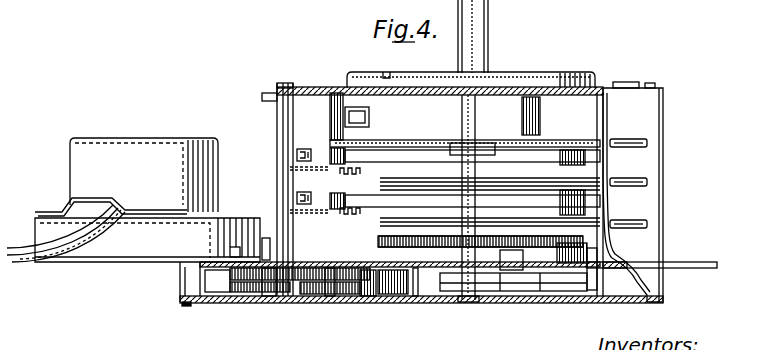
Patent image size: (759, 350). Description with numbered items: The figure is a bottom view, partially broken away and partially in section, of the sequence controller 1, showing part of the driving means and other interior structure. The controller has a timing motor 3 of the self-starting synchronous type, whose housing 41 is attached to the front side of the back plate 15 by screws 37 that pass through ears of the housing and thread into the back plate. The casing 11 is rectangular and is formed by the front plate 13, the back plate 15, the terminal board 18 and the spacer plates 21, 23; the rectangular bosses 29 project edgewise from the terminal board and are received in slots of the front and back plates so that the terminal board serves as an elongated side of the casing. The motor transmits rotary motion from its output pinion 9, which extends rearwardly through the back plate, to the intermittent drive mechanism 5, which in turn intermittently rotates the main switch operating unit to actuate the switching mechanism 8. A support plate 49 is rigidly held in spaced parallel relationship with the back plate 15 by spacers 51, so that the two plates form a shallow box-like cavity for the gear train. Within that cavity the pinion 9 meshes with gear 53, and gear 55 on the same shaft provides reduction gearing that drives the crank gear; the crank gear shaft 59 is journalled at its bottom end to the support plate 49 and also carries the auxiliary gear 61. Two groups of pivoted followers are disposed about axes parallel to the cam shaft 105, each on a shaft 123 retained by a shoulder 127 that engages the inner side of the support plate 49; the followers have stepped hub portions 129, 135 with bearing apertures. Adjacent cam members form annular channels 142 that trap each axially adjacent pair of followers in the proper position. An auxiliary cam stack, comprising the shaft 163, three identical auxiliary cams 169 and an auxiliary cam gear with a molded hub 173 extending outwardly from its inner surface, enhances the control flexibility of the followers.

The sequence controller 1 is at (207, 99).
The timing motor 3 is at (132, 143).
The intermittent drive mechanism 5 is at (274, 296).
The switching mechanism 8 is at (648, 168).
The output pinion 9 is at (200, 276).
The switch casing 11 is at (666, 205).
The front plate 13 is at (548, 73).
The back plate 15 is at (625, 265).
The terminal board 18 is at (655, 122).
The spacer plate 21 is at (262, 95).
The spacer plate 23 is at (650, 82).
The rectangular boss 29 is at (626, 81).
The screw 37 is at (265, 240).
The motor housing 41 is at (70, 163).
The support plate 49 is at (580, 303).
The spacer 51 is at (418, 259).
The gear 53 is at (250, 292).
The gear 55 is at (220, 292).
The crank gear shaft 59 is at (328, 296).
The auxiliary gear 61 is at (306, 294).
The cam shaft 105 is at (490, 7).
The follower shaft 123 is at (468, 285).
The shoulder 127 is at (474, 300).
The stepped hub portion 129 is at (462, 140).
The stepped hub portion 135 is at (478, 150).
The annular channel 142 is at (607, 208).
The shaft 163 is at (366, 296).
The auxiliary cam 169 is at (345, 135).
The hub 173 is at (380, 294).